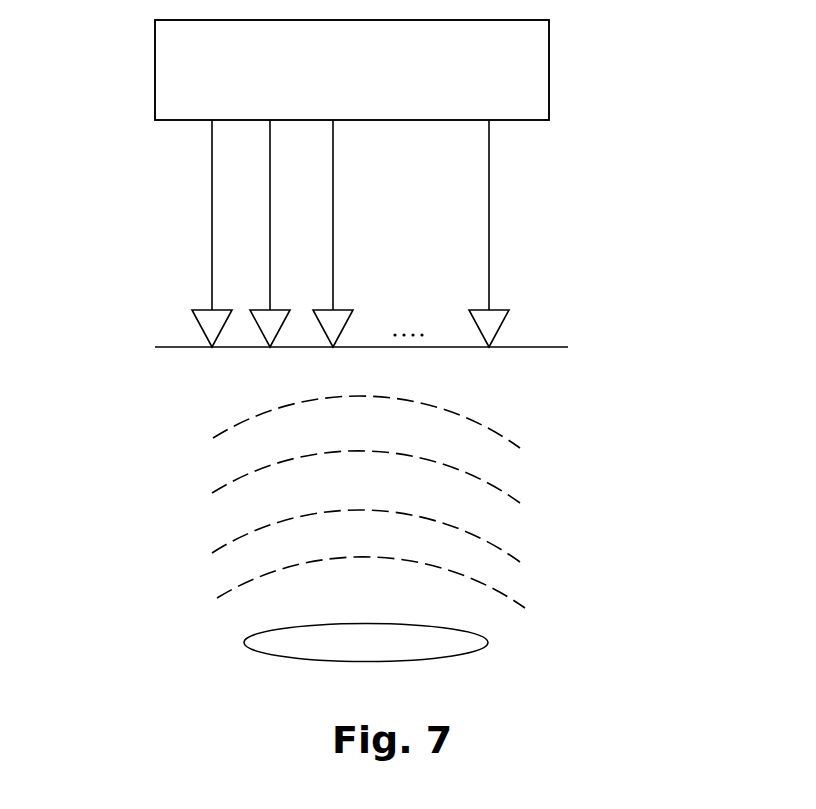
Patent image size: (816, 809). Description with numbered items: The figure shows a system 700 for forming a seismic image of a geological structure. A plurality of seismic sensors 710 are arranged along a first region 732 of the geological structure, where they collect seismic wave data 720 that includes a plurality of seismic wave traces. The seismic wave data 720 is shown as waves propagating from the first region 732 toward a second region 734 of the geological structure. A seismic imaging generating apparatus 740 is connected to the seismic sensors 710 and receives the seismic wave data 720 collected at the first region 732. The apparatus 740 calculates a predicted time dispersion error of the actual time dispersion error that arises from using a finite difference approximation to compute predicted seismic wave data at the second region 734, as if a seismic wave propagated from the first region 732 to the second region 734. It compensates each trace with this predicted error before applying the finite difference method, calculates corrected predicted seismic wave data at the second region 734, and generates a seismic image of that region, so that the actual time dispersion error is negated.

The system for forming a seismic image 700 is at (600, 120).
The seismic sensors 710 is at (488, 320).
The seismic wave data 720 is at (213, 438).
The first region 732 is at (568, 347).
The second region 734 is at (488, 643).
The seismic imaging generating apparatus 740 is at (352, 70).